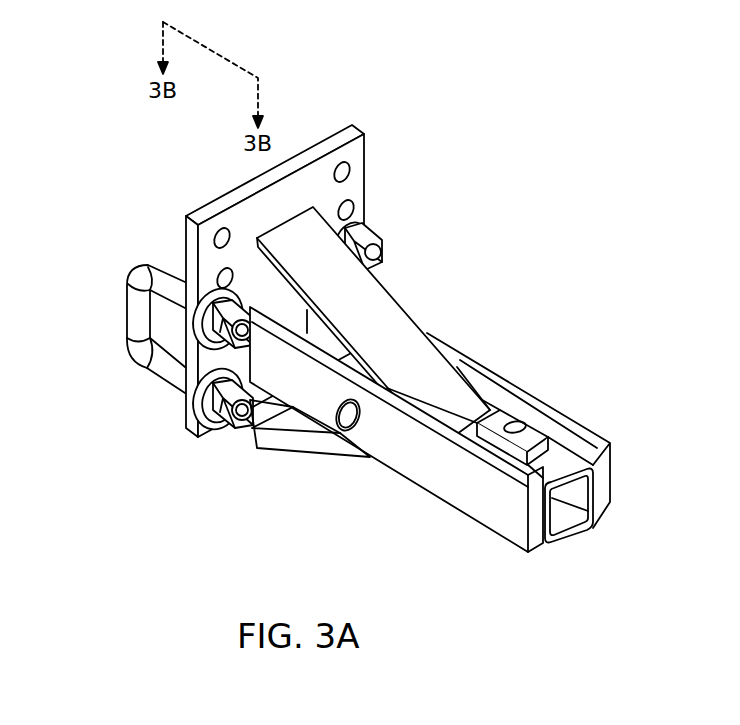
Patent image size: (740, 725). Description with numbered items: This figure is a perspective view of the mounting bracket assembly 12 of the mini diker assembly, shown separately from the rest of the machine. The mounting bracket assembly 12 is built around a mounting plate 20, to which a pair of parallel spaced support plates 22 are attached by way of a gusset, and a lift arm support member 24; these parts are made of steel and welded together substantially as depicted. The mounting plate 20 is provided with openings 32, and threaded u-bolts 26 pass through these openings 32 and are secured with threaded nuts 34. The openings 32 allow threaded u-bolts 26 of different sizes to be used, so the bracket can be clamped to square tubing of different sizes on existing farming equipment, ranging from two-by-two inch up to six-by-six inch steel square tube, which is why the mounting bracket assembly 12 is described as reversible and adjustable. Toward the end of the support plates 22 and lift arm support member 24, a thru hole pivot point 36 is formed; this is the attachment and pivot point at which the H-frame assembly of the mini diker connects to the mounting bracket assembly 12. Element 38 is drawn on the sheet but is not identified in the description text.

The mounting bracket assembly 12 is at (541, 494).
The mounting plate 20 is at (271, 281).
The support plates 22 is at (467, 358).
The lift arm support member 24 is at (574, 532).
The threaded u-bolts 26 is at (122, 308).
The openings 32 is at (213, 237).
The threaded nuts 34 is at (228, 430).
The thru hole pivot point 36 is at (512, 417).
The brace arm 38 is at (375, 307).